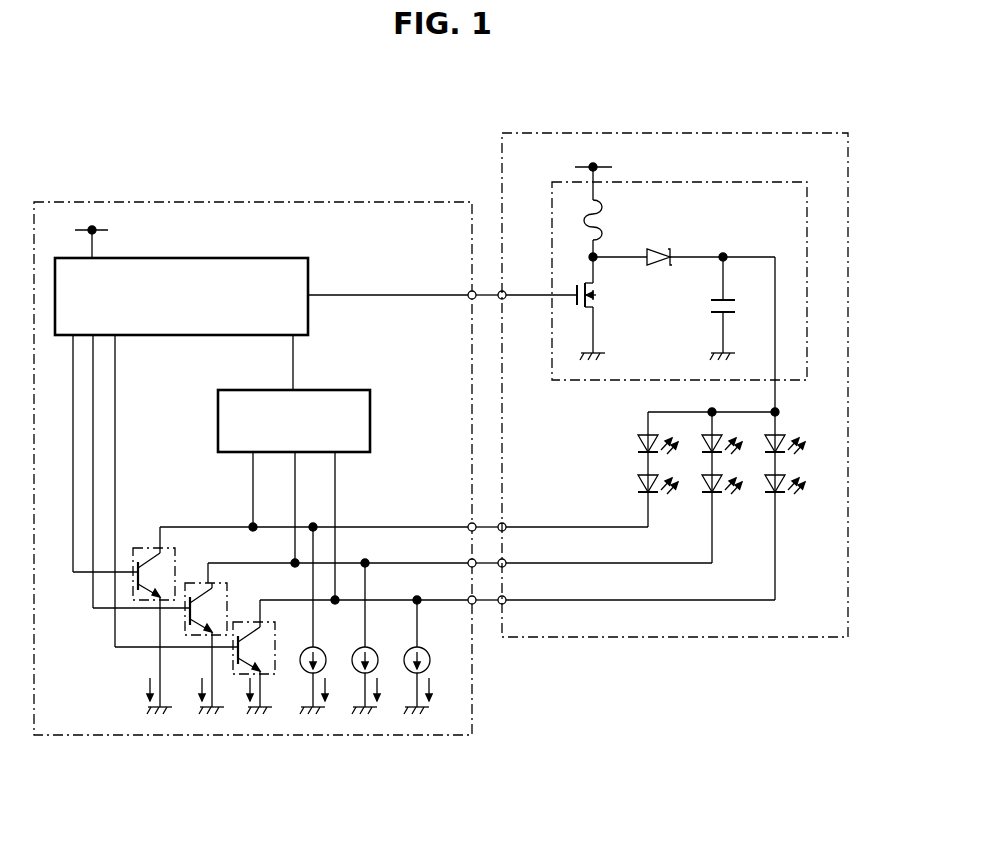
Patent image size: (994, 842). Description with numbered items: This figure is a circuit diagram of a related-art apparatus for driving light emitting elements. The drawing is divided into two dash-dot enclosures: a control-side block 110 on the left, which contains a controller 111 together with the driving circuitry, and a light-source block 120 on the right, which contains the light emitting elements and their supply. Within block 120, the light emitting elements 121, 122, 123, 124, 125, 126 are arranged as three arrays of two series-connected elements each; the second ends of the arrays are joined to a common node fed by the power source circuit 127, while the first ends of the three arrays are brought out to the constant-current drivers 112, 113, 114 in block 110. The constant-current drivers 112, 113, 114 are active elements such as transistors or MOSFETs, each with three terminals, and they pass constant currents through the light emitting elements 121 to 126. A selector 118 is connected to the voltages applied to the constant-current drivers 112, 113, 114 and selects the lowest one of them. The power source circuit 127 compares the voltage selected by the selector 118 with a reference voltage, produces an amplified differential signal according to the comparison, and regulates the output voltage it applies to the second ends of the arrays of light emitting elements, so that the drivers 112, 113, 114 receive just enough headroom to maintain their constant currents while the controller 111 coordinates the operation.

The light source control unit 110 is at (334, 202).
The controller 111 is at (246, 258).
The constant-current driver 112 is at (140, 548).
The constant-current driver 113 is at (192, 583).
The constant-current driver 114 is at (240, 622).
The selector 118 is at (366, 416).
The light source unit 120 is at (655, 133).
The light emitting element 121 is at (637, 440).
The light emitting element 122 is at (637, 480).
The light emitting element 123 is at (702, 432).
The light emitting element 124 is at (700, 497).
The light emitting element 125 is at (768, 438).
The light emitting element 126 is at (763, 497).
The power source circuit 127 is at (700, 182).